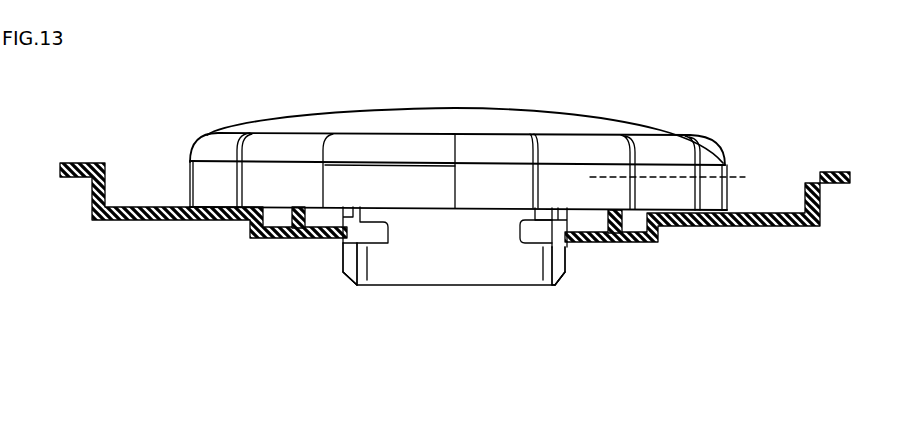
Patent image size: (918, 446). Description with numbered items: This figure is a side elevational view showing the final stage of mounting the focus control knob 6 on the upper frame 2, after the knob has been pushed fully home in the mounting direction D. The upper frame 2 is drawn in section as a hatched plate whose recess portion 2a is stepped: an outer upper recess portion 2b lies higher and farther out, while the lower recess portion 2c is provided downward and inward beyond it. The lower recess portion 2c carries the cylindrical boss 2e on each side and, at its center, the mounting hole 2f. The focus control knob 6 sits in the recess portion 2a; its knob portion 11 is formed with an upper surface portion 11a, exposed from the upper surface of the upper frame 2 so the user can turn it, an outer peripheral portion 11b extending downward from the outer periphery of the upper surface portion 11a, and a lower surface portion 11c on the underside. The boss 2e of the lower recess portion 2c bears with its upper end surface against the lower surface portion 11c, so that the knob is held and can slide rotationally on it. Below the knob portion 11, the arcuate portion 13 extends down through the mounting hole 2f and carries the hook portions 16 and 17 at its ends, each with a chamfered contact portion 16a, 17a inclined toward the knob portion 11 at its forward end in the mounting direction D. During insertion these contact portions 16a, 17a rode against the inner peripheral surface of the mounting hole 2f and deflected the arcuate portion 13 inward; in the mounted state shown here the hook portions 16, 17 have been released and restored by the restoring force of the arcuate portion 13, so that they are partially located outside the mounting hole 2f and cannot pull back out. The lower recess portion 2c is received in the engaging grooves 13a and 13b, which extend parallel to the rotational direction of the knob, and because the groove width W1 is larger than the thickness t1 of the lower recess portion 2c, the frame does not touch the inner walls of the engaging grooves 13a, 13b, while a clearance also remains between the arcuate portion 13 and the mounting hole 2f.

The upper frame 2 is at (72, 158).
The recess portion 2a is at (154, 179).
The upper recess portion 2b is at (128, 207).
The lower recess portion 2c is at (256, 240).
The boss 2e is at (298, 206).
The mounting hole 2f is at (347, 232).
The focus control knob 6 is at (509, 115).
The knob portion 11 is at (509, 156).
The upper surface portion 11a is at (583, 126).
The outer peripheral portion 11b is at (710, 165).
The lower surface portion 11c is at (489, 186).
The arcuate portion 13 is at (448, 278).
The engaging groove 13a is at (390, 232).
The engaging groove 13b is at (521, 229).
The hook portion 16 is at (343, 257).
The contact portion 16a is at (346, 286).
The hook portion 17 is at (564, 265).
The contact portion 17a is at (557, 287).
The width of engaging grooves W1 is at (543, 221).
The thickness of lower recess portion t1 is at (592, 217).
The mounting direction D is at (433, 353).